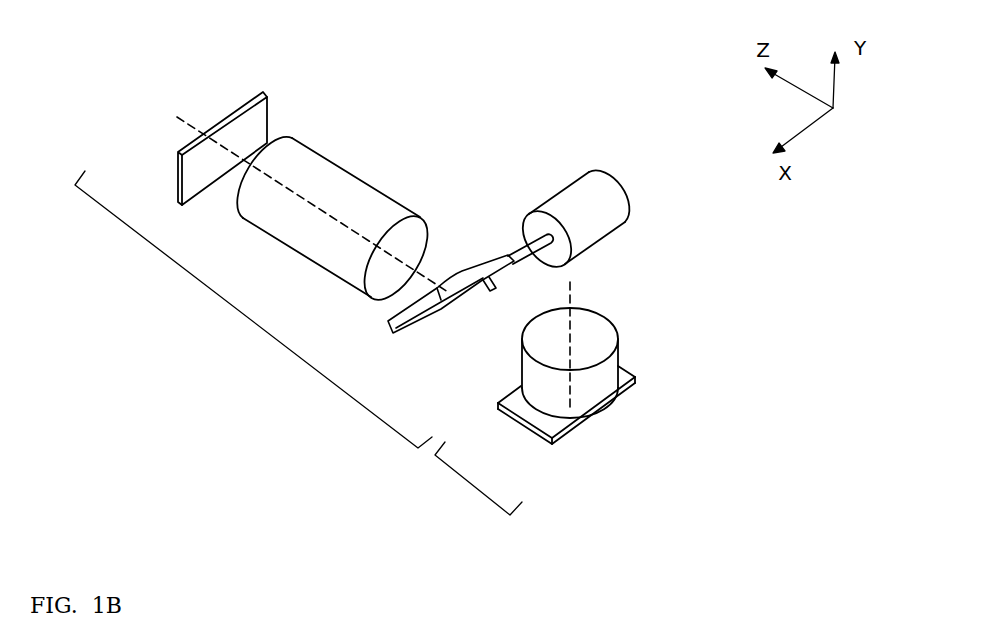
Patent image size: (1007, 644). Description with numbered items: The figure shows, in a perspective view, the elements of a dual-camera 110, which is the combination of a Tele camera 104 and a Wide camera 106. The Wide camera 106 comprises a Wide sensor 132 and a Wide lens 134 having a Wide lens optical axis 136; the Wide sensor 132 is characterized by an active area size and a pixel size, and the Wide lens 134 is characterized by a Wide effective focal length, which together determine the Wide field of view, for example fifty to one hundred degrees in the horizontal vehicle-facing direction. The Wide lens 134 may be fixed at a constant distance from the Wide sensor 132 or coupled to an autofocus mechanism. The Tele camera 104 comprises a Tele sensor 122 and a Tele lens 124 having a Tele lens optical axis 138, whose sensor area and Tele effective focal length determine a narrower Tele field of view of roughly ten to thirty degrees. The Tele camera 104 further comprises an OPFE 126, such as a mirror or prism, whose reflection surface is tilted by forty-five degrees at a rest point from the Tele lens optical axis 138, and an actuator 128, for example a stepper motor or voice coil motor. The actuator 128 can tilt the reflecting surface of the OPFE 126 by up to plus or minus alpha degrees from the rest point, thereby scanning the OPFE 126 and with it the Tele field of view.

The dual-camera 110 is at (423, 78).
The Tele camera 104 is at (247, 320).
The Wide camera 106 is at (470, 486).
The Tele sensor 122 is at (177, 177).
The Tele lens 124 is at (302, 260).
The OPFE 126 is at (415, 326).
The actuator 128 is at (558, 197).
The Wide sensor 132 is at (557, 438).
The Wide lens 134 is at (622, 348).
The Wide lens optical axis 136 is at (572, 332).
The Tele lens optical axis 138 is at (312, 203).